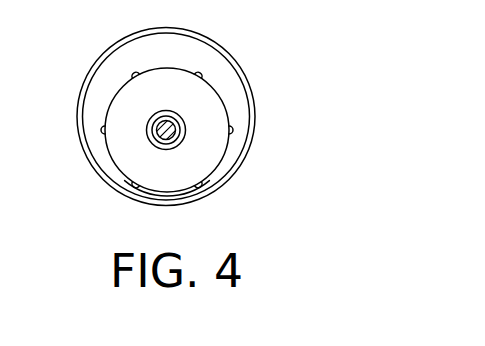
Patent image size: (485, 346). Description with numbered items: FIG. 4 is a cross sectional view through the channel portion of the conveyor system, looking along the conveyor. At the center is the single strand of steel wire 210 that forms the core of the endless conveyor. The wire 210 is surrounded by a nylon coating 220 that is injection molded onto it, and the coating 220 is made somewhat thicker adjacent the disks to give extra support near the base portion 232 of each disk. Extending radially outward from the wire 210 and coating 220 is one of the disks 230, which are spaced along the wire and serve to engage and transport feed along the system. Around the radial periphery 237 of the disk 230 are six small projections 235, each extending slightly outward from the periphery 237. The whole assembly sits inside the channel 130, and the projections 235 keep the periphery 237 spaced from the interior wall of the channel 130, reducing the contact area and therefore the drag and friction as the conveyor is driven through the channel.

The channel 130 is at (225, 51).
The disk 230 is at (223, 90).
The base portion 232 is at (205, 122).
The projection 235 is at (235, 130).
The radial periphery 237 is at (224, 157).
The coating 220 is at (148, 133).
The wire 210 is at (167, 137).